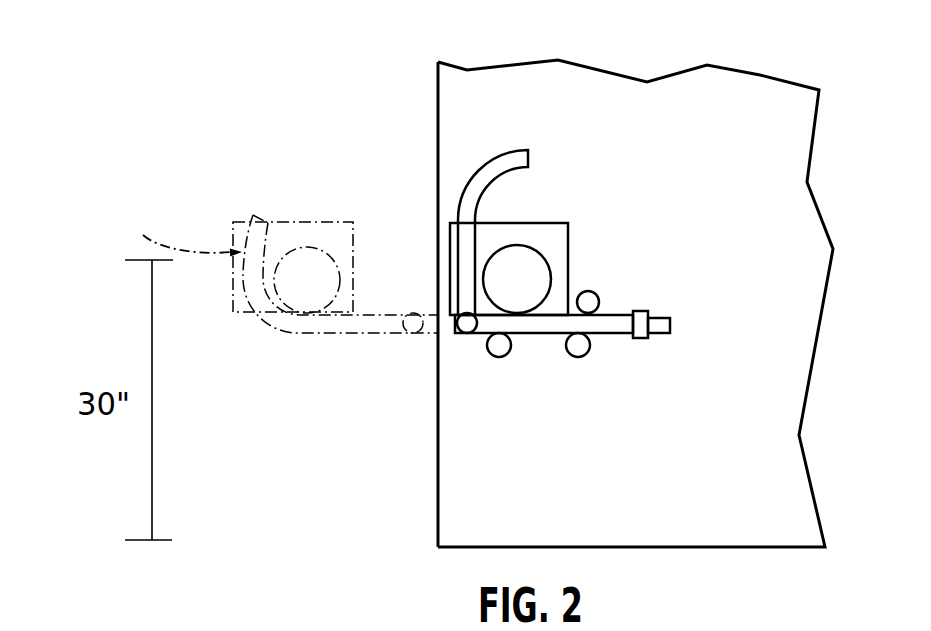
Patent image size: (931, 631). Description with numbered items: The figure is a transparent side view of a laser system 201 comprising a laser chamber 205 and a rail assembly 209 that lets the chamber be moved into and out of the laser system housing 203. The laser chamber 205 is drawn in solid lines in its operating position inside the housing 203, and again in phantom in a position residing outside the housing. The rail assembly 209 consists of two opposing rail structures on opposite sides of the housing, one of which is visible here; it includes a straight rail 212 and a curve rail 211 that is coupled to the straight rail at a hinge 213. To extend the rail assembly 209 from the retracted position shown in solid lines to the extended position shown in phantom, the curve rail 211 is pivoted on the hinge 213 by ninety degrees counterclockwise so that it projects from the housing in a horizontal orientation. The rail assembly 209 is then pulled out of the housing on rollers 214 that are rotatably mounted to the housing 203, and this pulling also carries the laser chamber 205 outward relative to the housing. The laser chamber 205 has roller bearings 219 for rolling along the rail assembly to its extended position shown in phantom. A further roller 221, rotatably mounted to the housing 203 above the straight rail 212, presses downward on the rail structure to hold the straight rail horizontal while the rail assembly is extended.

The laser system 201 is at (345, 155).
The laser system housing 203 is at (625, 85).
The laser chamber 205 is at (553, 222).
The rail assembly 209 is at (463, 353).
The curve rail 211 is at (492, 160).
The straight rail 212 is at (620, 312).
The hinge 213 is at (455, 325).
The rollers 214 is at (518, 363).
The roller bearings 219 is at (555, 260).
The roller 221 is at (600, 297).